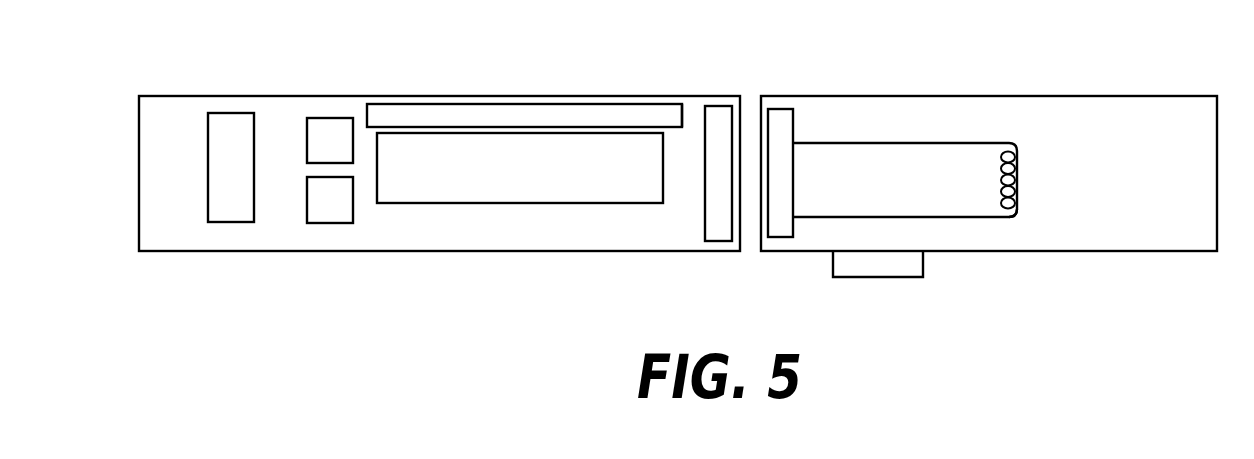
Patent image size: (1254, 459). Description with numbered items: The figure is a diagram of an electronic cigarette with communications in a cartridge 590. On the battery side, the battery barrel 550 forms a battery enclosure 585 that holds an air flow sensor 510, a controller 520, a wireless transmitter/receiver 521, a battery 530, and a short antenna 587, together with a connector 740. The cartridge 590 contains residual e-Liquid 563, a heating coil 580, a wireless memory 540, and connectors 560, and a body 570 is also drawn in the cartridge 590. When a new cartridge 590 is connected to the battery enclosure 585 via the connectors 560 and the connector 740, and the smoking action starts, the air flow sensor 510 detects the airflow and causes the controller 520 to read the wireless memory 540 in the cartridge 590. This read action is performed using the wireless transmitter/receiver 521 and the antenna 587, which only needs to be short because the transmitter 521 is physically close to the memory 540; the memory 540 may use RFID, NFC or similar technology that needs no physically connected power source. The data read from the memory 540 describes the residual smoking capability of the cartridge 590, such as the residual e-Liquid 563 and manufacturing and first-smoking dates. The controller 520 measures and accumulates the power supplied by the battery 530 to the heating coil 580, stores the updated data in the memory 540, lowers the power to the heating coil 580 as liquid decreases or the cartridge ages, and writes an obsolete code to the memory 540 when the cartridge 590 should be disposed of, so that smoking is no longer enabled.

The air flow sensor 510 is at (203, 216).
The controller 520 is at (348, 227).
The wireless transmitter/receiver 521 is at (306, 127).
The battery 530 is at (448, 207).
The wireless memory 540 is at (877, 278).
The battery barrel 550 is at (618, 93).
The connectors 560 is at (797, 239).
The residual e-Liquid 563 is at (1026, 213).
The reservoir 570 is at (858, 213).
The heating coil 580 is at (1030, 161).
The battery enclosure 585 is at (394, 97).
The antenna 587 is at (667, 99).
The cartridge 590 is at (1182, 95).
The connector 740 is at (702, 231).